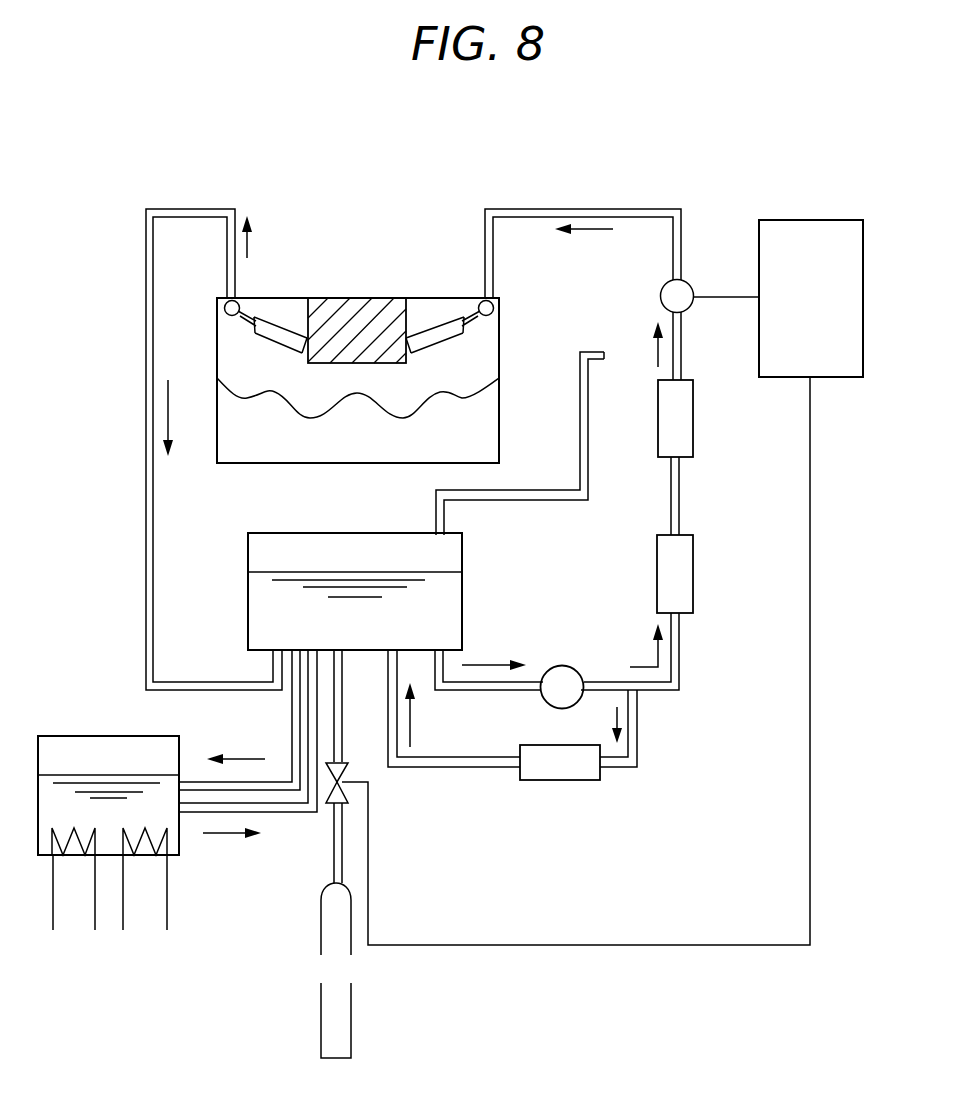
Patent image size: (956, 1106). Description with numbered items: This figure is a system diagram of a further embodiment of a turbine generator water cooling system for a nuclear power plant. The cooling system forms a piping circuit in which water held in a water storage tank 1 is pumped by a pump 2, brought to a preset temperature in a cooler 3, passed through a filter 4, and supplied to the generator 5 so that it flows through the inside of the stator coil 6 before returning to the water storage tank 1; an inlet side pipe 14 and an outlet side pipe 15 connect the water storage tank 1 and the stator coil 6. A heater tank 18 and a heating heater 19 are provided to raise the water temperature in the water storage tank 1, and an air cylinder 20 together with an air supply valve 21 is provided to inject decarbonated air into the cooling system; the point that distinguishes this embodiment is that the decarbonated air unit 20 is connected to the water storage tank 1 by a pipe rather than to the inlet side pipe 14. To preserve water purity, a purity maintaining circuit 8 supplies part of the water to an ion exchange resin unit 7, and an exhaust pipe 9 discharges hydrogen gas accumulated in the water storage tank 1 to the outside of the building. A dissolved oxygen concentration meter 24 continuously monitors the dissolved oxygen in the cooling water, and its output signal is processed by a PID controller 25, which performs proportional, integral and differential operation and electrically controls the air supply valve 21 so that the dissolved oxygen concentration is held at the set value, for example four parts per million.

The water storage tank 1 is at (247, 558).
The pump 2 is at (563, 665).
The cooler 3 is at (693, 568).
The filter 4 is at (693, 402).
The generator 5 is at (423, 297).
The stator coil 6 is at (285, 325).
The ion exchange resin unit 7 is at (555, 780).
The purity maintaining circuit 8 is at (637, 715).
The exhaust pipe 9 is at (528, 500).
The inlet side pipe 14 is at (550, 208).
The outlet side pipe 15 is at (146, 507).
The heater tank 18 is at (108, 736).
The heating heater 19 is at (167, 910).
The air cylinder 20 is at (351, 1010).
The air supply valve 21 is at (328, 805).
The dissolved oxygen concentration meter 24 is at (660, 295).
The PID controller 25 is at (812, 218).